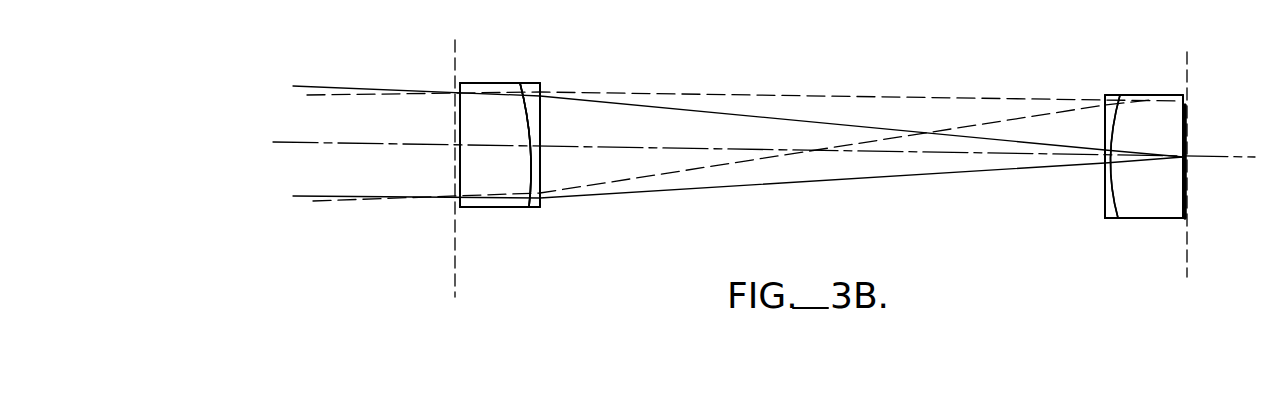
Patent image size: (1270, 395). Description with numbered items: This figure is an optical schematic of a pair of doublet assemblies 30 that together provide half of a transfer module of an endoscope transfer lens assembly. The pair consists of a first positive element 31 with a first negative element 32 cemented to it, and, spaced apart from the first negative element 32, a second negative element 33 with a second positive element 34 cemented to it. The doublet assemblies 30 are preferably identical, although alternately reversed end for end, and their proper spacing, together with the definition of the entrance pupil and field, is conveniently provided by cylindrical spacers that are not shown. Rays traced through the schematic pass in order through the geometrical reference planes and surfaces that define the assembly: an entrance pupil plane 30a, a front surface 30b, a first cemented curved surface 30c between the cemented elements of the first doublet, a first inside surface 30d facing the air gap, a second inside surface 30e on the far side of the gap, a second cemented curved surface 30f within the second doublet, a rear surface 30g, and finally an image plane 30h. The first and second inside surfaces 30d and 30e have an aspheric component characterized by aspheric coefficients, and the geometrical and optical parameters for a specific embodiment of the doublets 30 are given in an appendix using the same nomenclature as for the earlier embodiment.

The doublet assembly 30 is at (496, 78).
The first positive element 31 is at (472, 102).
The first negative element 32 is at (535, 97).
The second negative element 33 is at (1112, 96).
The second positive element 34 is at (1178, 108).
The entrance pupil plane 30a is at (454, 282).
The front surface 30b is at (470, 207).
The first cemented curved surface 30c is at (530, 207).
The first inside surface 30d is at (543, 182).
The second inside surface 30e is at (1102, 210).
The second cemented curved surface 30f is at (1107, 219).
The rear surface 30g is at (1177, 210).
The image plane 30h is at (1186, 247).